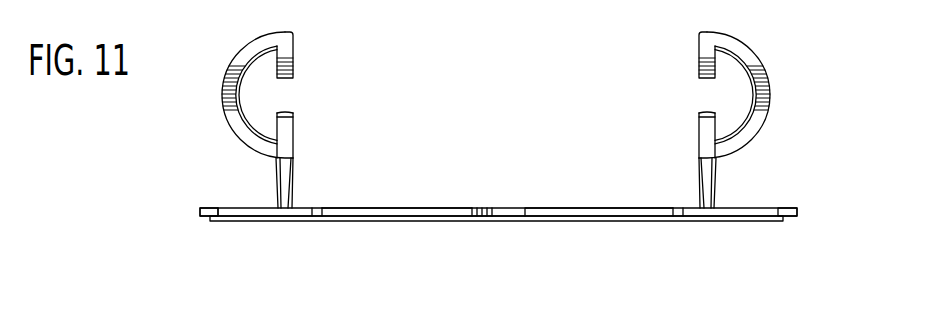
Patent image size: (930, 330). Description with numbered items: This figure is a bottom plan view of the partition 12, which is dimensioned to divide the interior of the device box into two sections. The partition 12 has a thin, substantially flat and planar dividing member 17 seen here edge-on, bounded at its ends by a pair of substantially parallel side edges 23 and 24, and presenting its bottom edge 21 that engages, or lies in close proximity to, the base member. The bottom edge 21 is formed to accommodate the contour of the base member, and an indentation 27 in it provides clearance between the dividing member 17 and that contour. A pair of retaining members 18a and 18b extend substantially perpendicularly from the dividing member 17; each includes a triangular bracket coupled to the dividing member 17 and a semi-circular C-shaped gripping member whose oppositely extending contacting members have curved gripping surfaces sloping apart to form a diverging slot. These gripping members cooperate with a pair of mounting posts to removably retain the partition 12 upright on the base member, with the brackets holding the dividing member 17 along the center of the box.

The partition 12 is at (176, 220).
The dividing member 17 is at (549, 208).
The retaining member 18a is at (314, 63).
The retaining member 18b is at (686, 67).
The bottom edge 21 is at (441, 208).
The side edge 23 is at (799, 211).
The side edge 24 is at (199, 211).
The indentation 27 is at (497, 208).